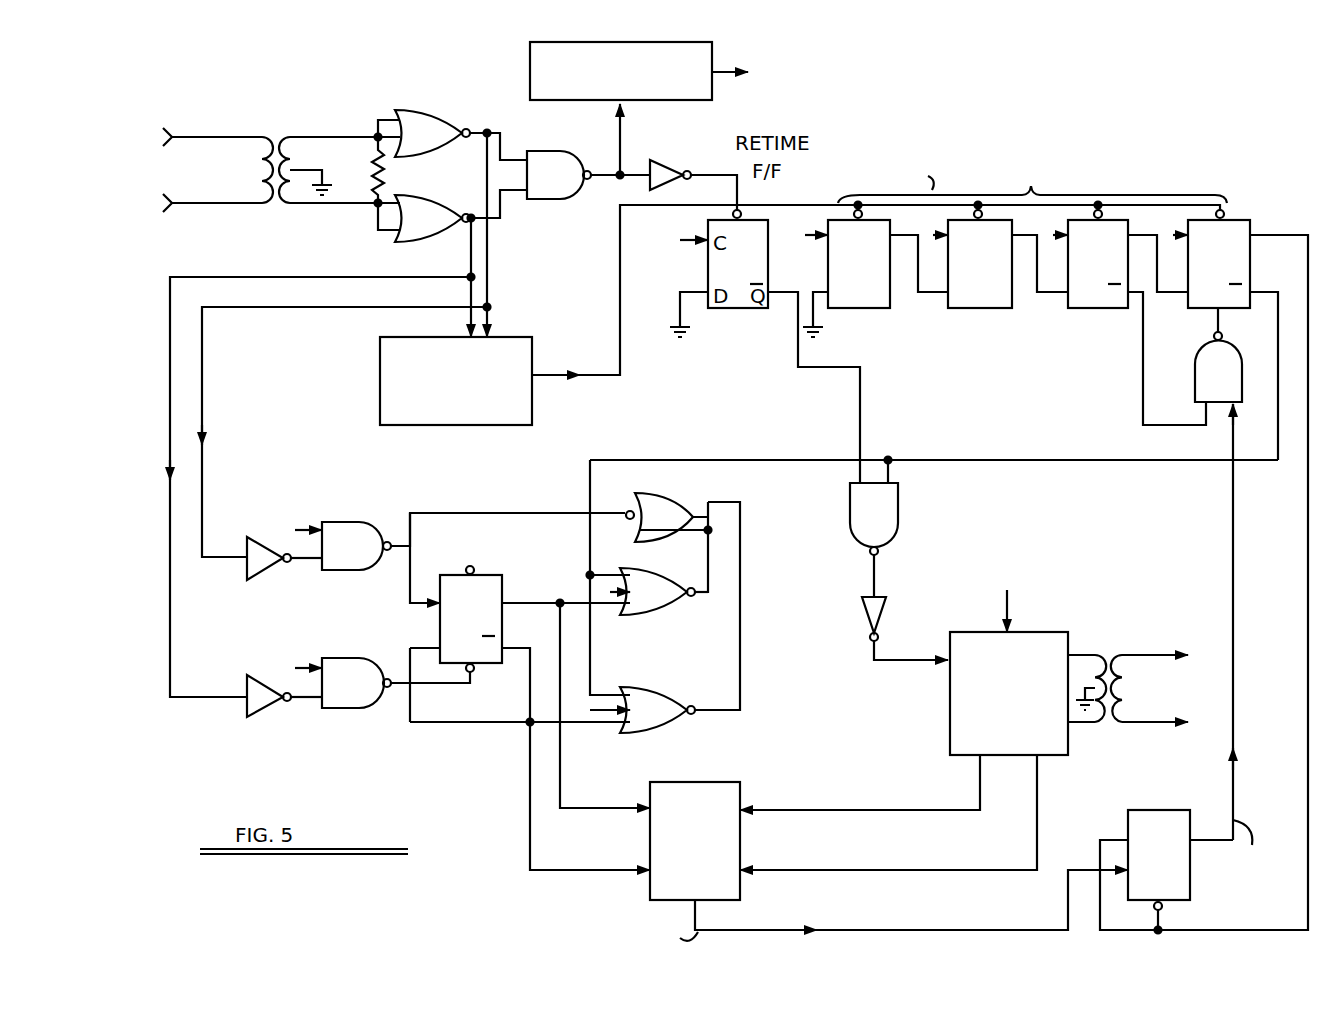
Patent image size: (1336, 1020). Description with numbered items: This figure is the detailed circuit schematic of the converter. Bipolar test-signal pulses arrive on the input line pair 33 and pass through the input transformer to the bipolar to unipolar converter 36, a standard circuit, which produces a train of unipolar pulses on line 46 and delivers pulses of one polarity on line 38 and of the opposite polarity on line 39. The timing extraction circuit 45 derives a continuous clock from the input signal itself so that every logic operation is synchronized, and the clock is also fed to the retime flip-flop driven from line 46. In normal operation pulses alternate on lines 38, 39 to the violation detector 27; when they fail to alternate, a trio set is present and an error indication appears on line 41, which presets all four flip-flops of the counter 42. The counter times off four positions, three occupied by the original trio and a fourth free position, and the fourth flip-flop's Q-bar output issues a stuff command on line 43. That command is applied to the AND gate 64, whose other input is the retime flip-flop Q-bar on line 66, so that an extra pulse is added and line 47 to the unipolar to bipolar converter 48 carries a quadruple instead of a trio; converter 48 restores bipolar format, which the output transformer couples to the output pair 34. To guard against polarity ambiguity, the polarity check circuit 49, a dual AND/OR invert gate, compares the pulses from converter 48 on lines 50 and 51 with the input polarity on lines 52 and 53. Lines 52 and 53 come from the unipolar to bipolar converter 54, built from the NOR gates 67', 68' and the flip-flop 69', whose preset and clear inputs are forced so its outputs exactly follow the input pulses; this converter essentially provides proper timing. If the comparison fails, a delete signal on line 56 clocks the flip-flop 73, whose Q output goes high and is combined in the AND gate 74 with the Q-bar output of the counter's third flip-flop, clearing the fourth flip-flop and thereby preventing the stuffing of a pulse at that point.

The violation detector 27 is at (380, 397).
The input line pair 33 is at (218, 190).
The output pair 34 is at (1172, 724).
The bipolar to unipolar converter 36 is at (338, 158).
The input line (one polarity) 38 is at (468, 258).
The input line (opposite polarity) 39 is at (490, 259).
The error line 41 is at (622, 372).
The counter 42 is at (1055, 538).
The stuff output command line 43 is at (1008, 460).
The timing extraction circuit 45 is at (563, 101).
The unipolar pulse line 46 is at (615, 180).
The line to unipolar to bipolar converter 47 is at (884, 663).
The unipolar to bipolar converter 48 is at (1063, 632).
The polarity check circuit 49 is at (705, 838).
The polarity check input line 50 is at (922, 810).
The polarity check input line 51 is at (922, 870).
The input polarity line 52 is at (590, 782).
The input polarity line 53 is at (528, 775).
The unipolar to bipolar converter 54 is at (378, 512).
The delete signal line 56 is at (982, 930).
The AND gate 64 is at (899, 528).
The retime flip-flop Q-bar line 66 is at (860, 413).
The NOR gate 67' is at (651, 609).
The NOR gate 68' is at (631, 699).
The flip-flop 69' is at (520, 630).
The flip-flop 73 is at (1160, 810).
The AND gate 74 is at (1243, 352).